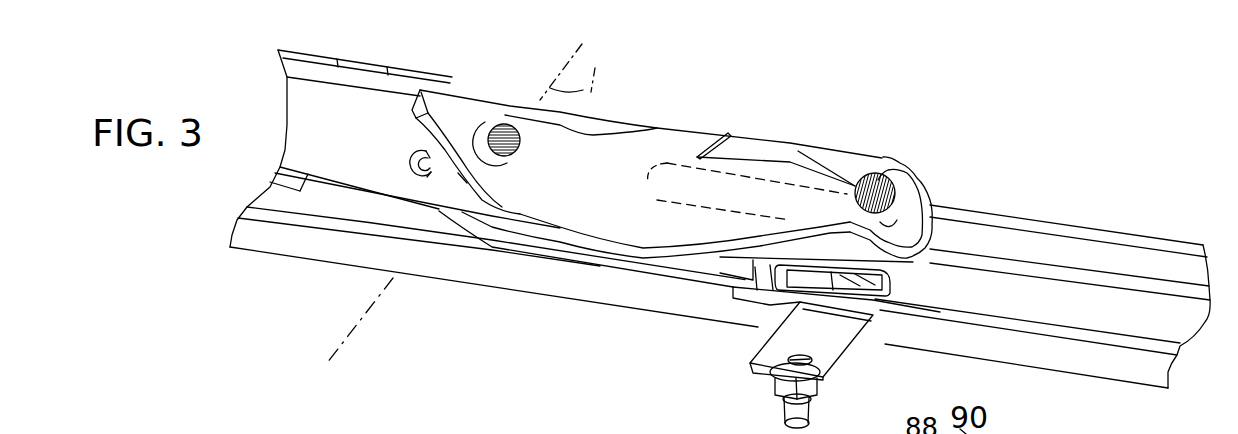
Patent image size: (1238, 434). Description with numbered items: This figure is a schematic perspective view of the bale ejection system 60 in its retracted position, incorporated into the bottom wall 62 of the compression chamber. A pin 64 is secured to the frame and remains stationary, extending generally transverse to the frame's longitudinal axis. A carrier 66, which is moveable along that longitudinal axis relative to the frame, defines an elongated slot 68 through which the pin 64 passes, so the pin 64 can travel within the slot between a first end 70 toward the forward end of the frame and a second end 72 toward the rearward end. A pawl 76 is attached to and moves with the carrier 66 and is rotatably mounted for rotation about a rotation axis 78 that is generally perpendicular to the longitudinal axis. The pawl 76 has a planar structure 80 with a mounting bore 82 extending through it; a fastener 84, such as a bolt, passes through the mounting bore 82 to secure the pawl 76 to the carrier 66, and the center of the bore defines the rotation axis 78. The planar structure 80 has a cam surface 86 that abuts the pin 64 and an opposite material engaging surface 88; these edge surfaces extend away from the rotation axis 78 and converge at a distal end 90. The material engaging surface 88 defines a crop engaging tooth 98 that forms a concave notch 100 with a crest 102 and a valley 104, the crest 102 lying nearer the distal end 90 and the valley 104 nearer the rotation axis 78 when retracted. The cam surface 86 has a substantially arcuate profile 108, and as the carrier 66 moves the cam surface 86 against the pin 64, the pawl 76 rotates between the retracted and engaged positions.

The bale ejection system 60 is at (812, 93).
The bottom wall 62 is at (397, 65).
The pin 64 is at (912, 173).
The carrier 66 is at (345, 147).
The elongated slot 68 is at (928, 252).
The first end of the slot 70 is at (665, 183).
The second end of the slot 72 is at (930, 207).
The pawl 76 is at (618, 131).
The rotation axis 78 is at (595, 80).
The planar structure 80 is at (565, 172).
The mounting bore 82 is at (507, 157).
The fastener 84 is at (503, 125).
The cam surface 86 is at (665, 252).
The material engaging surface 88 is at (855, 137).
The distal end 90 is at (893, 150).
The crop engaging tooth 98 is at (698, 135).
The concave notch 100 is at (725, 158).
The crest 102 is at (731, 130).
The valley 104 is at (699, 157).
The arcuate profile 108 is at (697, 252).